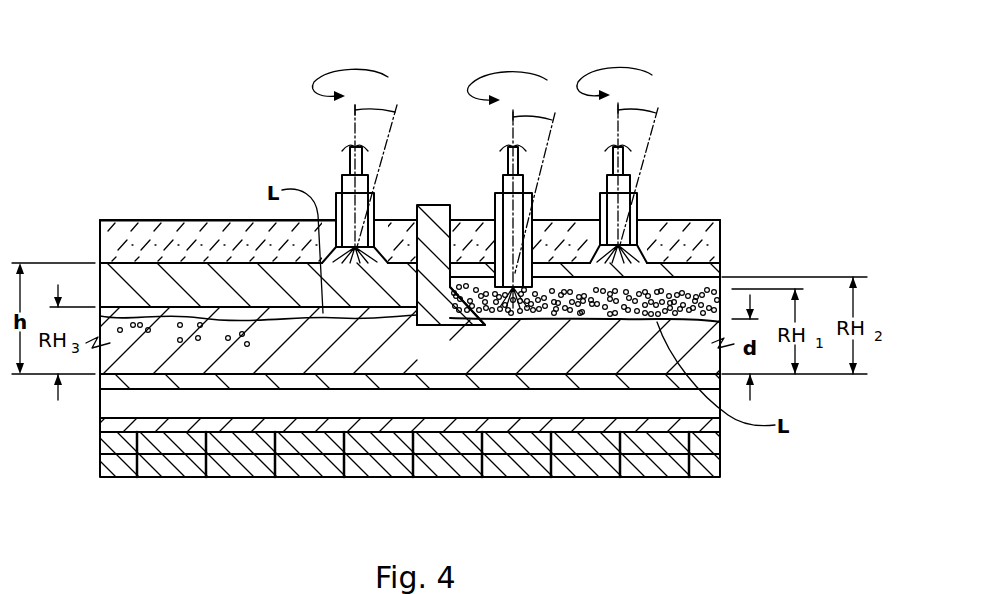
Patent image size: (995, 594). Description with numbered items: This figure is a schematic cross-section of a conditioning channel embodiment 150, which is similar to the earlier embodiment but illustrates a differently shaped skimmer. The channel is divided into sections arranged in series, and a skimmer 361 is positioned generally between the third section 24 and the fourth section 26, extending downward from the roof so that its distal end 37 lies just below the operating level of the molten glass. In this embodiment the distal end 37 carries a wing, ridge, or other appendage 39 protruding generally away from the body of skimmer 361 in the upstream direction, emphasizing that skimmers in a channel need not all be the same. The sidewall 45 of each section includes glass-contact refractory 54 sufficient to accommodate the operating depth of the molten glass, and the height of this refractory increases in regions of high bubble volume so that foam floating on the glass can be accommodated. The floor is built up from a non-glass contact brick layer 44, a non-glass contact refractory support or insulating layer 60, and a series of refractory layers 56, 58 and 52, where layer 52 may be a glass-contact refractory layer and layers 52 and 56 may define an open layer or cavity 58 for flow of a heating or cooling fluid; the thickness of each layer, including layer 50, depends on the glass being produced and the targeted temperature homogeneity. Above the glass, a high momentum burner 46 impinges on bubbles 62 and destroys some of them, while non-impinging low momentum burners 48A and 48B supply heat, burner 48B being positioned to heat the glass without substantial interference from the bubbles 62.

The embodiment 150 is at (152, 108).
The third section 24 is at (702, 220).
The fourth section 26 is at (138, 220).
The layer 50 is at (192, 225).
The sidewall 45 is at (248, 272).
The glass-contact refractory 54 is at (588, 343).
The refractory layer 52 is at (307, 383).
The open layer or cavity 58 is at (137, 402).
The refractory layer 56 is at (247, 423).
The non-glass contact refractory support or insulating layer 60 is at (118, 445).
The non-glass contact brick layer 44 is at (167, 468).
The bubbles 62 is at (198, 337).
The skimmer 361 is at (422, 205).
The distal end 37 is at (432, 330).
The wing, ridge, or other appendage 39 is at (453, 330).
The low momentum burner 48B is at (336, 205).
The high momentum burner 46 is at (495, 205).
The low momentum burner 48A is at (638, 203).